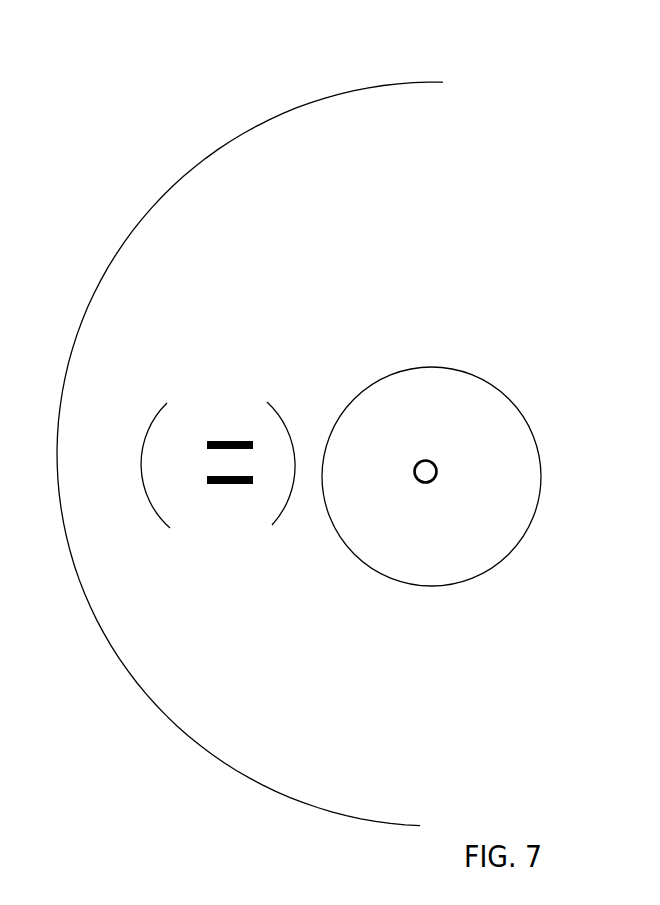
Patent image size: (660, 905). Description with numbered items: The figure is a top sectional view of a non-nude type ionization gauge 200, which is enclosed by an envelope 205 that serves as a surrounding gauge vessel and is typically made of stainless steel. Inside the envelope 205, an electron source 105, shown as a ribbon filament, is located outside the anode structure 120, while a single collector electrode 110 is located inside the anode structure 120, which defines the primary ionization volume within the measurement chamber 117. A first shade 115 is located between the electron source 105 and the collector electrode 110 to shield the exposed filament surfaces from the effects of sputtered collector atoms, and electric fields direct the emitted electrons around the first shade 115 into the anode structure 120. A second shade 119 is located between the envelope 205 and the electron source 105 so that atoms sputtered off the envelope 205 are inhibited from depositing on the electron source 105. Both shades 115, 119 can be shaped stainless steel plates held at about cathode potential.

The ionization gauge 200 is at (160, 137).
The envelope 205 is at (333, 103).
The second shade 119 is at (138, 445).
The electron source 105 is at (231, 441).
The first shade 115 is at (278, 518).
The anode structure 120 is at (509, 553).
The collector electrode 110 is at (430, 483).
The measurement chamber 117 is at (389, 735).